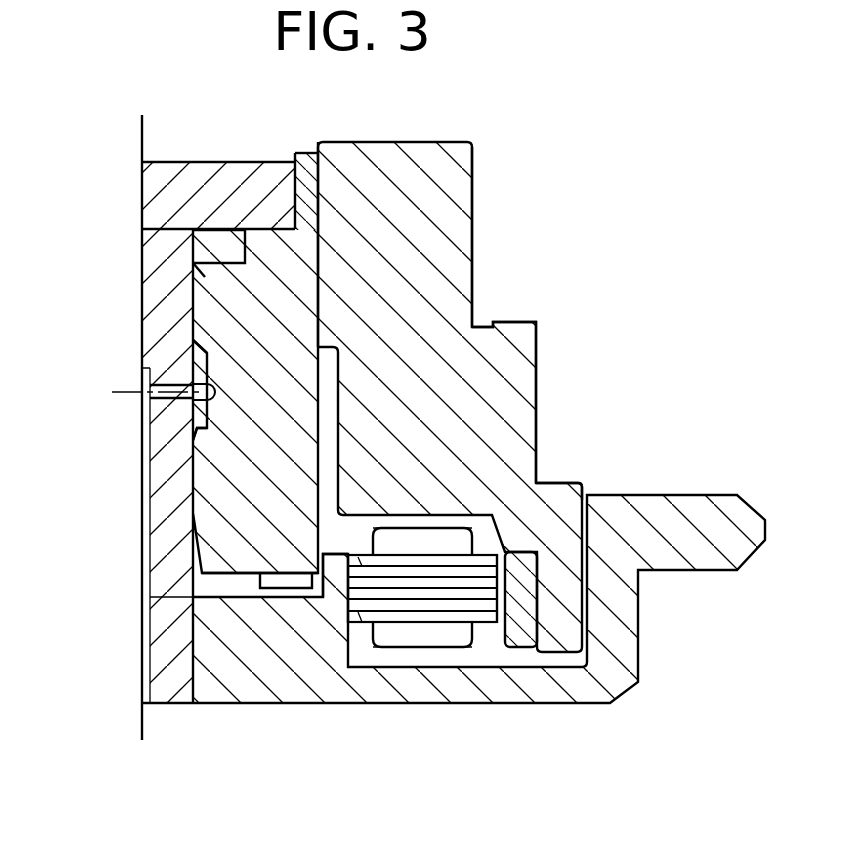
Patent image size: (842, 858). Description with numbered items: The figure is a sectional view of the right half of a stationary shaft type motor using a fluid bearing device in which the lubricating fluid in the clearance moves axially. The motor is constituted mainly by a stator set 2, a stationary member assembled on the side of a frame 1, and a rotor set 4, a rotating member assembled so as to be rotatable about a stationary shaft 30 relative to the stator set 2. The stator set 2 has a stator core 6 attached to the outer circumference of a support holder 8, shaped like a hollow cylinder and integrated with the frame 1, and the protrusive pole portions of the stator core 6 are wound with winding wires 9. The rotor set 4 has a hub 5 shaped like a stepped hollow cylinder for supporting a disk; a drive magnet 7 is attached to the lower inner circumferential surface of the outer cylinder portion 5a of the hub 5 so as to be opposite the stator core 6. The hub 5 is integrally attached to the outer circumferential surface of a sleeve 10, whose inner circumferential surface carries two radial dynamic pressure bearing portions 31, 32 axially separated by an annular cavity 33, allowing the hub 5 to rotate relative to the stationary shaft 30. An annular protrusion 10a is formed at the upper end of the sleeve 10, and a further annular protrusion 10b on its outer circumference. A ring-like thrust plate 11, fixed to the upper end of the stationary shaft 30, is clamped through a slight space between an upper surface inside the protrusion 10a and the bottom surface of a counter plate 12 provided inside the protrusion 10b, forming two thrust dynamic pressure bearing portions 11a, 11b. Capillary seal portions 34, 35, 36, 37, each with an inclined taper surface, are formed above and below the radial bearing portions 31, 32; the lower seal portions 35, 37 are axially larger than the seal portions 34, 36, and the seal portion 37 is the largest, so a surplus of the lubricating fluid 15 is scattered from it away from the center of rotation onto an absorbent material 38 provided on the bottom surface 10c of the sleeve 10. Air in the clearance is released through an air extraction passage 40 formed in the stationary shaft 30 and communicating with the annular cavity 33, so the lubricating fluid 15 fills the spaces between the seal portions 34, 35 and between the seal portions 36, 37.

The frame 1 is at (492, 687).
The stator set 2 is at (492, 648).
The rotor set 4 is at (496, 292).
The hub 5 is at (502, 423).
The outer cylinder portion 5a is at (578, 485).
The stator core 6 is at (440, 605).
The drive magnet 7 is at (530, 622).
The support holder 8 is at (330, 562).
The winding wires 9 is at (400, 638).
The sleeve 10 is at (310, 320).
The annular protrusion 10a is at (274, 270).
The annular protrusion 10b is at (303, 185).
The bottom surface 10c is at (230, 580).
The thrust plate 11 is at (197, 250).
The thrust dynamic pressure bearing portion 11a is at (200, 215).
The thrust dynamic pressure bearing portion 11b is at (197, 290).
The counter plate 12 is at (180, 178).
The lubricating fluid 15 is at (192, 605).
The stationary shaft 30 is at (153, 507).
The radial dynamic pressure bearing portion 31 is at (197, 303).
The radial dynamic pressure bearing portion 32 is at (193, 517).
The annular cavity 33 is at (200, 405).
The capillary seal portion 34 is at (195, 267).
The capillary seal portion 35 is at (197, 345).
The capillary seal portion 36 is at (195, 437).
The capillary seal portion 37 is at (193, 595).
The absorbent material 38 is at (282, 580).
The air extraction passage 40 is at (147, 393).